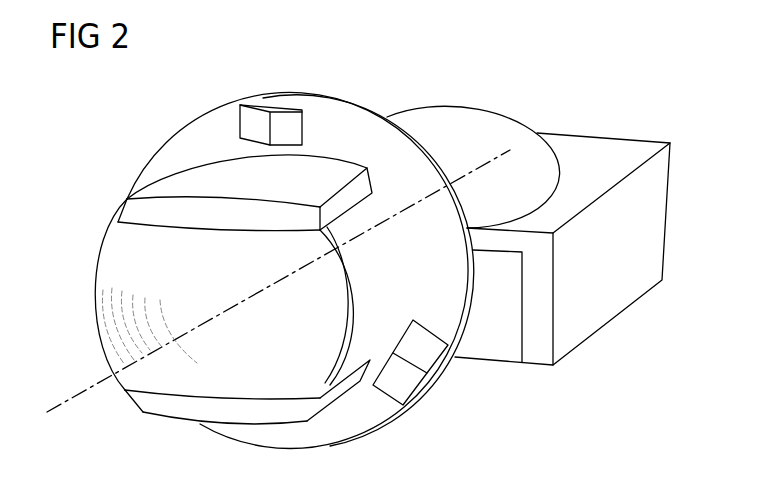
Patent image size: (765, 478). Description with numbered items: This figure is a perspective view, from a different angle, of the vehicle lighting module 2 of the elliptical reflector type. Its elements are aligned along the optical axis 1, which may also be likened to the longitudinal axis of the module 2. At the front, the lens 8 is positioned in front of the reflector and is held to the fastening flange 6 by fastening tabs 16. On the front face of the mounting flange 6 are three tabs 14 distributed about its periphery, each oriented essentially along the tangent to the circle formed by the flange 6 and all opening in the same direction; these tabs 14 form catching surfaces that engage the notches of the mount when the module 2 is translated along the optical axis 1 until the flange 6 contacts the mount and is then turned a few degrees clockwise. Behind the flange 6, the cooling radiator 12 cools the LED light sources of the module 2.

The optical axis 1 is at (82, 389).
The lighting module 2 is at (417, 78).
The fastening flange 6 is at (190, 140).
The lens 8 is at (108, 292).
The cooling radiator 12 is at (612, 297).
The tabs 14 is at (287, 122).
The fastening tabs 16 is at (133, 213).